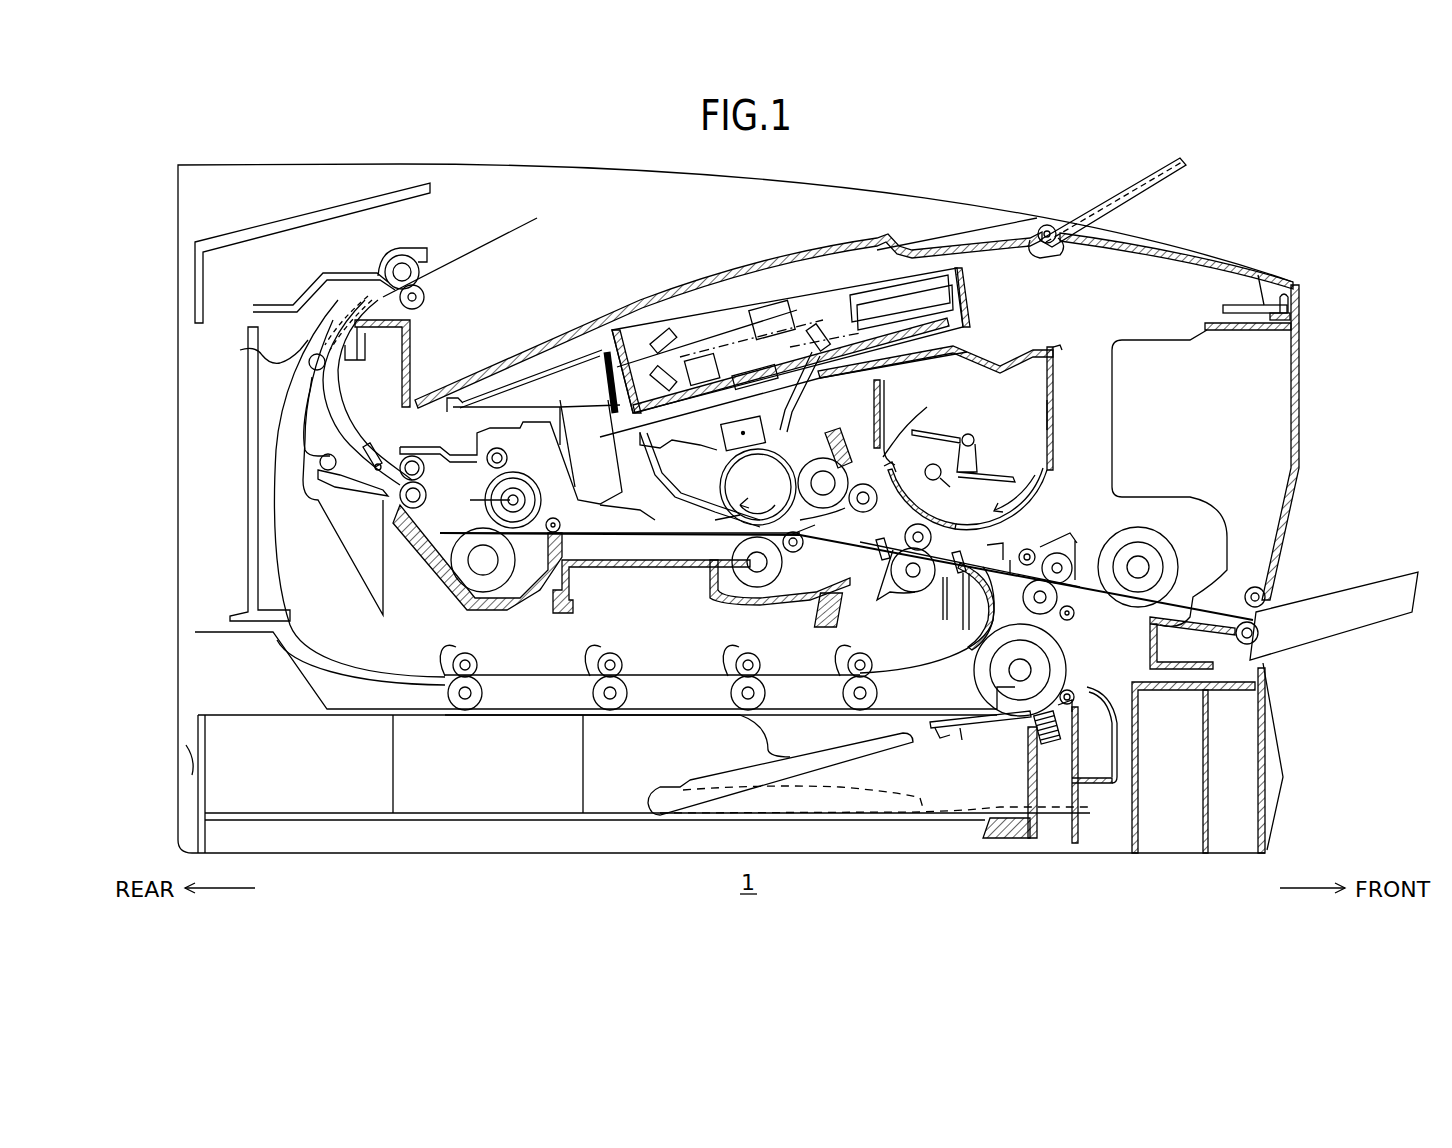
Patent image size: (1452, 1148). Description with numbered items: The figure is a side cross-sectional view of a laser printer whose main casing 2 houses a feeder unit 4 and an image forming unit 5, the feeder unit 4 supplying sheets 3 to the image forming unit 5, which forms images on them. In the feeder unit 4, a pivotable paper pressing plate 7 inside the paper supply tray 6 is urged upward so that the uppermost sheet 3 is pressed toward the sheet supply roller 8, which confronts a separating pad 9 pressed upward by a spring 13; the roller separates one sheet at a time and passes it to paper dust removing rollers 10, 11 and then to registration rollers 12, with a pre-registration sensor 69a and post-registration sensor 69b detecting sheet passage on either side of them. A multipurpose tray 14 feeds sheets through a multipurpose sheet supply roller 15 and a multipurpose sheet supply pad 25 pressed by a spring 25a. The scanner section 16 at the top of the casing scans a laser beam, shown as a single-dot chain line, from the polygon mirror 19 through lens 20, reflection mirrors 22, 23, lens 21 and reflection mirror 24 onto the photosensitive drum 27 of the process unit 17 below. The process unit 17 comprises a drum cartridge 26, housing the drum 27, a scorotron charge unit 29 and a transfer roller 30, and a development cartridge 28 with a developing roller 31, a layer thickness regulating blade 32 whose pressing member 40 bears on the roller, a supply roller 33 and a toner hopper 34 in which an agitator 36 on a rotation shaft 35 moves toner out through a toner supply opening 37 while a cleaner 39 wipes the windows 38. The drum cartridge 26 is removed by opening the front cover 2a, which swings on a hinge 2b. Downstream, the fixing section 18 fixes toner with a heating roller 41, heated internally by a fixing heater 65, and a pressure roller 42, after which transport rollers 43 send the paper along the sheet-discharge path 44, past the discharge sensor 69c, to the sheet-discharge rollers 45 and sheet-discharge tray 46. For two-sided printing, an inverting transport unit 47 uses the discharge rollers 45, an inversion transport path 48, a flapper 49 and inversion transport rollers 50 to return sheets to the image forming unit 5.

The main casing 2 is at (178, 540).
The front cover 2a is at (1299, 385).
The hinge 2b is at (1268, 580).
The sheet 3 is at (500, 238).
The feeder unit 4 is at (262, 700).
The image forming unit 5 is at (655, 575).
The paper supply tray 6 is at (192, 770).
The paper pressing plate 7 is at (812, 752).
The sheet supply roller 8 is at (985, 660).
The separating pad 9 is at (1020, 725).
The paper dust removing roller 10 is at (1140, 755).
The paper dust removing rollers 11 is at (1050, 545).
The registration rollers 12 is at (880, 575).
The spring 13 is at (1030, 747).
The multipurpose tray 14 is at (1350, 600).
The multipurpose sheet supply roller 15 is at (1192, 582).
The scanner section 16 is at (745, 290).
The process unit 17 is at (1015, 335).
The fixing section 18 is at (545, 535).
The polygon mirror 19 is at (915, 280).
The lens 20 is at (770, 305).
The lens 21 is at (707, 395).
The reflection mirror 22 is at (655, 325).
The reflection mirror 23 is at (633, 392).
The reflection mirror 24 is at (818, 325).
The multipurpose sheet supply pad 25 is at (1162, 628).
The spring 25a is at (1143, 690).
The drum cartridge 26 is at (640, 512).
The photosensitive drum 27 is at (722, 520).
The development cartridge 28 is at (1055, 385).
The scorotron charge unit 29 is at (758, 487).
The transfer roller 30 is at (768, 600).
The developing roller 31 is at (812, 475).
The layer thickness regulating blade 32 is at (842, 440).
The supply roller 33 is at (878, 490).
The toner hopper 34 is at (1058, 410).
The rotation shaft 35 is at (970, 430).
The agitator 36 is at (995, 470).
The toner supply opening 37 is at (887, 450).
The window 38 is at (992, 493).
The cleaner 39 is at (930, 430).
The pressing member 40 is at (914, 421).
The heating roller 41 is at (550, 468).
The pressure roller 42 is at (490, 602).
The transport rollers 43 is at (425, 478).
The sheet-discharge path 44 is at (404, 385).
The sheet-discharge rollers 45 is at (385, 265).
The sheet-discharge tray 46 is at (560, 345).
The inverting transport unit 47 is at (370, 657).
The inversion transport path 48 is at (262, 452).
The flapper 49 is at (310, 460).
The inversion transport rollers 50 is at (658, 663).
The fixing heater 65 is at (494, 488).
The pre-registration sensor 69a is at (985, 514).
The post-registration sensor 69b is at (928, 484).
The discharge sensor 69c is at (375, 452).